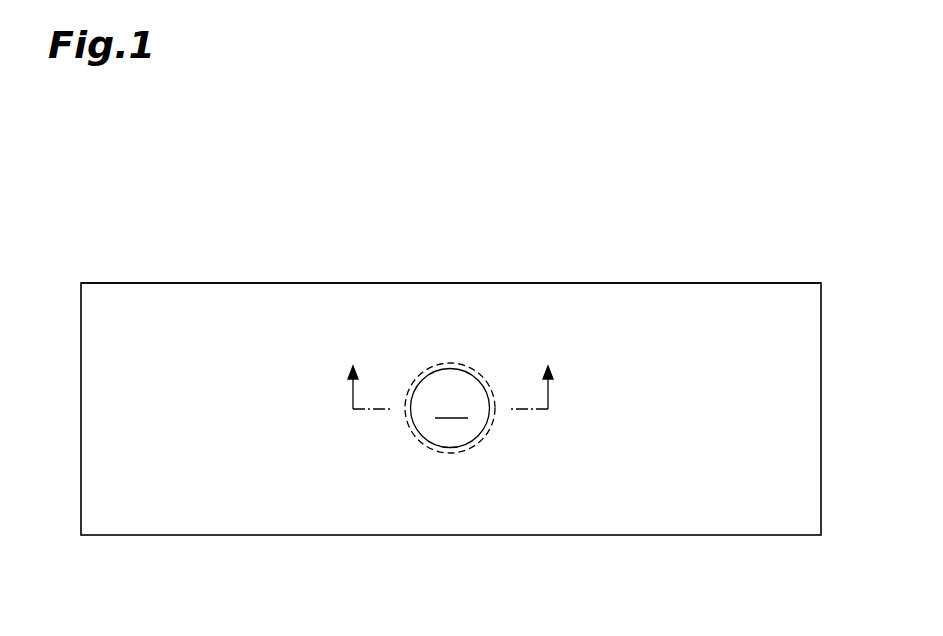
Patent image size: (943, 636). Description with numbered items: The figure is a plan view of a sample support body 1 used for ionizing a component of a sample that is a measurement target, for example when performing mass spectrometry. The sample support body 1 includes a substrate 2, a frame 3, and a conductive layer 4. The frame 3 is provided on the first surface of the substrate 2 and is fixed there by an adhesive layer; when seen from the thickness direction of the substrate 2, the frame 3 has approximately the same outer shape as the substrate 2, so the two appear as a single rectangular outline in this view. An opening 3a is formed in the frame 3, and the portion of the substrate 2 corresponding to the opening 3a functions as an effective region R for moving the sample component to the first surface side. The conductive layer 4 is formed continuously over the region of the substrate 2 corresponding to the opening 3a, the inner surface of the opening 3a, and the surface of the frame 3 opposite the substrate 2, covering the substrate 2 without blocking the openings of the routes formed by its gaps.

The sample support body 1 is at (680, 203).
The substrate 2 is at (661, 536).
The frame 3 is at (661, 540).
The opening 3a is at (416, 423).
The conductive layer 4 is at (236, 293).